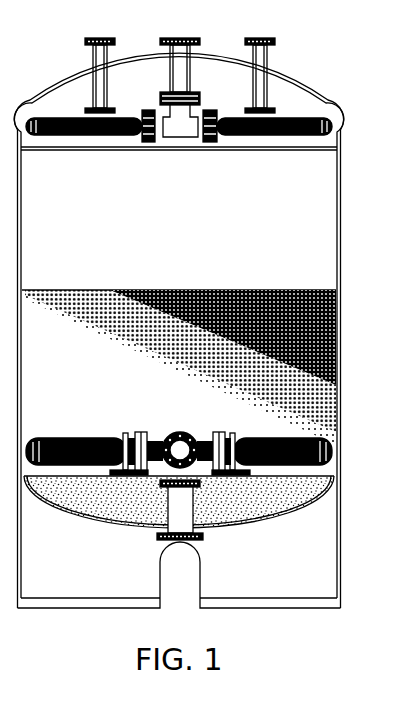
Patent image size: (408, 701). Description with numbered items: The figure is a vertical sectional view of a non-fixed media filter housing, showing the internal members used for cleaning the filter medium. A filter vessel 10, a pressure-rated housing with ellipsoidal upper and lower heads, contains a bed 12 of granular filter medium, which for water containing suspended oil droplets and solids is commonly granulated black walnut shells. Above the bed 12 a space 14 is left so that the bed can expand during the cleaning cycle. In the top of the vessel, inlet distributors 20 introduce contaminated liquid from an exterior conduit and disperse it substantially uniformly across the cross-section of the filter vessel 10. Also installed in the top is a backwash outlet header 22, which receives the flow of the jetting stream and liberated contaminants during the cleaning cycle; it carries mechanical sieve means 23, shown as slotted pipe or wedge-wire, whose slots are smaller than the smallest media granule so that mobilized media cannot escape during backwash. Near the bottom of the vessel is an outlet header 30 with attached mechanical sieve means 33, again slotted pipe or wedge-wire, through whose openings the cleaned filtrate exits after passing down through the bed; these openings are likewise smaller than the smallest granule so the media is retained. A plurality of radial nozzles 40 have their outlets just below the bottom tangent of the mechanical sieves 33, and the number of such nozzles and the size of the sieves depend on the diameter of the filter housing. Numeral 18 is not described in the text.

The filter vessel 10 is at (340, 272).
The bed of granular filter medium 12 is at (340, 325).
The space 14 is at (288, 220).
The bottom head 18 is at (258, 514).
The inlet distributors 20 is at (88, 110).
The backwash outlet header 22 is at (180, 137).
The mechanical sieve means 23 is at (81, 137).
The outlet header 30 is at (178, 432).
The mechanical sieve means 33 is at (85, 437).
The radial nozzles 40 is at (118, 478).